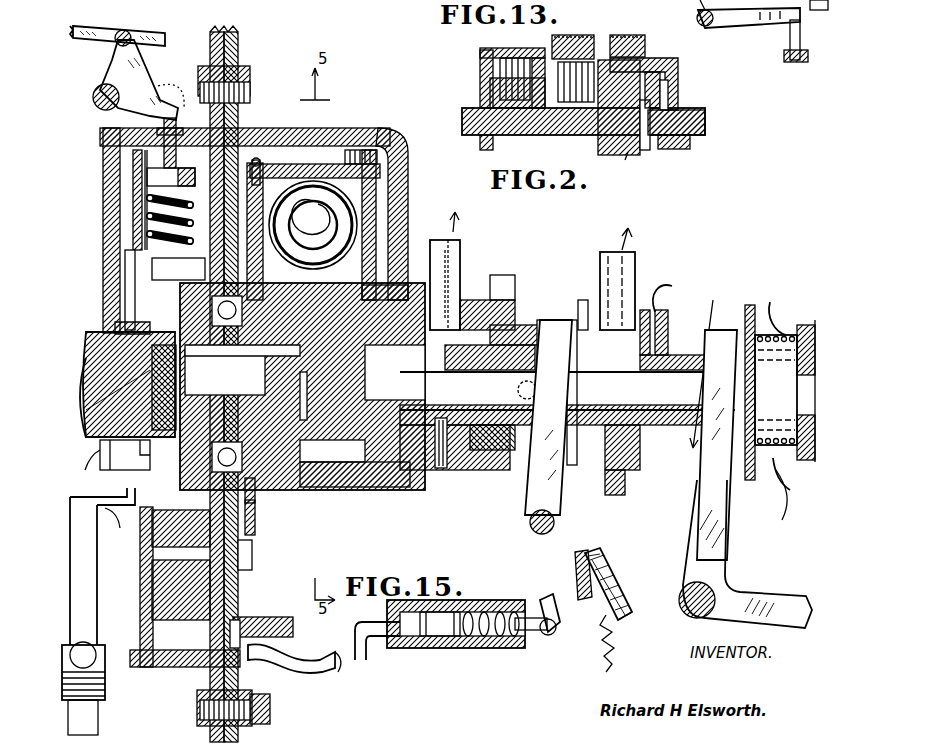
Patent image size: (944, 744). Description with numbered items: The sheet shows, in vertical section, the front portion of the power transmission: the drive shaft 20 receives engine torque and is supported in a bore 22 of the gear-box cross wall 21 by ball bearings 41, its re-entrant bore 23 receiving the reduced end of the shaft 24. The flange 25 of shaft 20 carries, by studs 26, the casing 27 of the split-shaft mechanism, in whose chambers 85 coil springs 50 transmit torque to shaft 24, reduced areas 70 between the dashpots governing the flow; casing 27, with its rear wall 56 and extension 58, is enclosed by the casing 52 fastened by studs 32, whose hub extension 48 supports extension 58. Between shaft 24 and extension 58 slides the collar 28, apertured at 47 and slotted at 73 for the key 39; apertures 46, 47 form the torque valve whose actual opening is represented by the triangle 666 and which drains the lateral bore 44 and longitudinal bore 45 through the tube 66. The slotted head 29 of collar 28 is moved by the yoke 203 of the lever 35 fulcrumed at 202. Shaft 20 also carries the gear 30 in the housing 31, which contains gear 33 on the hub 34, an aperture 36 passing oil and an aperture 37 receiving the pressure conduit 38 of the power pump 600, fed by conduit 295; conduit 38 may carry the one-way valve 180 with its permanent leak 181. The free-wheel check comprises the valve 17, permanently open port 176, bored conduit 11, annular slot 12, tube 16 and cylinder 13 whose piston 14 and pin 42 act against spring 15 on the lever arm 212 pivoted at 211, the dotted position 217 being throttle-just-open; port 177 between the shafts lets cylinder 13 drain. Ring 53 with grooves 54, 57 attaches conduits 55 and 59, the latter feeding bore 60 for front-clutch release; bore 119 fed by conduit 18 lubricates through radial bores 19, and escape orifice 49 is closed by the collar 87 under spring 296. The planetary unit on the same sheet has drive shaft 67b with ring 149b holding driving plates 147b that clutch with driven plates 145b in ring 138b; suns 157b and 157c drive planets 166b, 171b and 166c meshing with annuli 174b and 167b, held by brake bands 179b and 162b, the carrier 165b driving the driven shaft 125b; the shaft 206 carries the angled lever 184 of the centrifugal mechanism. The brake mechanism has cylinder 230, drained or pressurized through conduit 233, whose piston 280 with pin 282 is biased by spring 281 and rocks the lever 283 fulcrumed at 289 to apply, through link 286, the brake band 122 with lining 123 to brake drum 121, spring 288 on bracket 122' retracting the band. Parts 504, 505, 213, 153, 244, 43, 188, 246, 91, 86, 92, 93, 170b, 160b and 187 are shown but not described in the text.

In FIG. 2, the control rod 504 is at (96, 27).
In FIG. 2, the pivot pin 505 is at (160, 32).
In FIG. 2, the lever arm 212 is at (112, 72).
In FIG. 2, the pivot 211 is at (95, 100).
In FIG. 2, the throttle-just-open position 217 is at (172, 86).
In FIG. 2, the plunger rod 213 is at (172, 120).
In FIG. 2, the extension pin 42 is at (156, 131).
In FIG. 2, the casing 27 is at (318, 165).
In FIG. 2, the casing 52 is at (400, 134).
In FIG. 2, the cylinder 13 is at (104, 152).
In FIG. 2, the piston 14 is at (148, 177).
In FIG. 2, the tube 16 is at (144, 202).
In FIG. 2, the spring 15 is at (150, 235).
In FIG. 2, the cross wall 21 is at (240, 50).
In FIG. 2, the studs 32 is at (252, 74).
In FIG. 2, the radial bores 19 is at (328, 330).
In FIG. 2, the studs 26 is at (259, 160).
In FIG. 2, the enlarged end or flange 25 is at (298, 166).
In FIG. 2, the spline 153 is at (378, 156).
In FIG. 2, the chambers 85 is at (378, 200).
In FIG. 2, the coil springs 50 is at (292, 214).
In FIG. 2, the lateral bore 44 is at (420, 352).
In FIG. 2, the shaft 24 is at (330, 470).
In FIG. 2, the port 177 is at (262, 355).
In FIG. 2, the bore 119 is at (272, 382).
In FIG. 2, the reduced areas / drain outlet 70 is at (240, 312).
In FIG. 2, the valve 17 is at (233, 450).
In FIG. 2, the recess 244 is at (178, 269).
In FIG. 2, the gear 30 is at (125, 272).
In FIG. 2, the drive shaft 20 is at (108, 328).
In FIG. 2, the bored conduit 11 is at (86, 340).
In FIG. 2, the core 43 is at (150, 376).
In FIG. 2, the permanently open port 176 is at (78, 400).
In FIG. 2, the surface 188 is at (88, 420).
In FIG. 2, the re-entrant bore 23 is at (85, 458).
In FIG. 2, the annular slot 12 is at (106, 455).
In FIG. 2, the power pump 600 is at (80, 497).
In FIG. 2, the conduit 38 is at (70, 528).
In FIG. 2, the aperture 37 is at (116, 522).
In FIG. 2, the gear 33 is at (160, 528).
In FIG. 2, the housing 31 is at (146, 590).
In FIG. 2, the hub 34 is at (150, 652).
In FIG. 2, the permanent leak 181 is at (74, 650).
In FIG. 2, the spring-biased ball valve 180 is at (105, 682).
In FIG. 2, the aperture 36 is at (245, 618).
In FIG. 2, the conduit 295 is at (340, 672).
In FIG. 2, the bore 22 is at (252, 498).
In FIG. 2, the ball bearings 41 is at (252, 532).
In FIG. 2, the conduit 18 is at (250, 558).
In FIG. 2, the rear wall 56 is at (380, 256).
In FIG. 2, the torque valve opening 666 is at (472, 213).
In FIG. 2, the tube 66 is at (460, 247).
In FIG. 2, the hub extension 48 is at (470, 300).
In FIG. 2, the aperture 46 is at (505, 290).
In FIG. 2, the aperture 47 is at (500, 326).
In FIG. 2, the collar extension 58 is at (480, 345).
In FIG. 2, the longitudinal bore 45 is at (556, 320).
In FIG. 2, the slotted head 29 is at (574, 318).
In FIG. 2, the yoke 203 is at (566, 390).
In FIG. 2, the sliding collar 28 is at (525, 430).
In FIG. 2, the slot 73 is at (460, 470).
In FIG. 2, the key 39 is at (432, 466).
In FIG. 2, the block 246 is at (480, 452).
In FIG. 2, the lever arm 35 is at (560, 506).
In FIG. 2, the fulcrum 202 is at (541, 535).
In FIG. 2, the conduit 55 is at (636, 262).
In FIG. 2, the conduit 59 is at (672, 288).
In FIG. 2, the ring 53 is at (668, 326).
In FIG. 2, the annular groove 57 is at (672, 358).
In FIG. 2, the longitudinal bore 60 is at (706, 363).
In FIG. 2, the escape orifice 49 is at (722, 336).
In FIG. 2, the collar 87 is at (750, 305).
In FIG. 2, the coil 91 is at (786, 304).
In FIG. 2, the hook 86 is at (786, 462).
In FIG. 2, the spring 296 is at (791, 495).
In FIG. 2, the bracket 92 is at (728, 520).
In FIG. 2, the pivot 93 is at (680, 610).
In FIG. 2, the annular groove 54 is at (624, 482).
In FIG. 13, the drive shaft 67b is at (505, 136).
In FIG. 13, the ring 138b is at (484, 148).
In FIG. 13, the driven plates 145b is at (480, 68).
In FIG. 13, the ring 149b is at (503, 50).
In FIG. 13, the annulus 174b is at (520, 58).
In FIG. 13, the block 170b is at (517, 93).
In FIG. 13, the driving clutch plates 147b is at (490, 94).
In FIG. 13, the central drive sun 157b is at (575, 104).
In FIG. 13, the reverse brake band 179b is at (596, 38).
In FIG. 13, the second series of planet gears 171b is at (612, 140).
In FIG. 13, the first series of planet gears 166b is at (646, 140).
In FIG. 13, the low brake band 162b is at (646, 46).
In FIG. 13, the housing 160b is at (678, 74).
In FIG. 13, the annulus 167b is at (660, 90).
In FIG. 13, the carrier 165b is at (668, 96).
In FIG. 13, the planet gears 166c is at (706, 124).
In FIG. 13, the driven shaft 125b is at (690, 142).
In FIG. 13, the sun 157c is at (626, 160).
In FIG. 13, the shaft 206 is at (706, 28).
In FIG. 13, the angled lever 184 is at (740, 22).
In FIG. 13, the link 187 is at (793, 62).
In FIG. 15, the cylinder 230 is at (388, 612).
In FIG. 15, the conduit 233 is at (372, 640).
In FIG. 15, the piston 280 is at (440, 637).
In FIG. 15, the spring 281 is at (486, 637).
In FIG. 15, the extension pin 282 is at (534, 631).
In FIG. 15, the fulcrum 289 is at (556, 632).
In FIG. 15, the lever 283 is at (560, 616).
In FIG. 15, the link 286 is at (578, 590).
In FIG. 15, the brake band 122 is at (617, 573).
In FIG. 15, the lining 123 is at (607, 562).
In FIG. 15, the bracket 122' is at (622, 568).
In FIG. 15, the brake drum 121 is at (622, 602).
In FIG. 15, the spring 288 is at (614, 620).